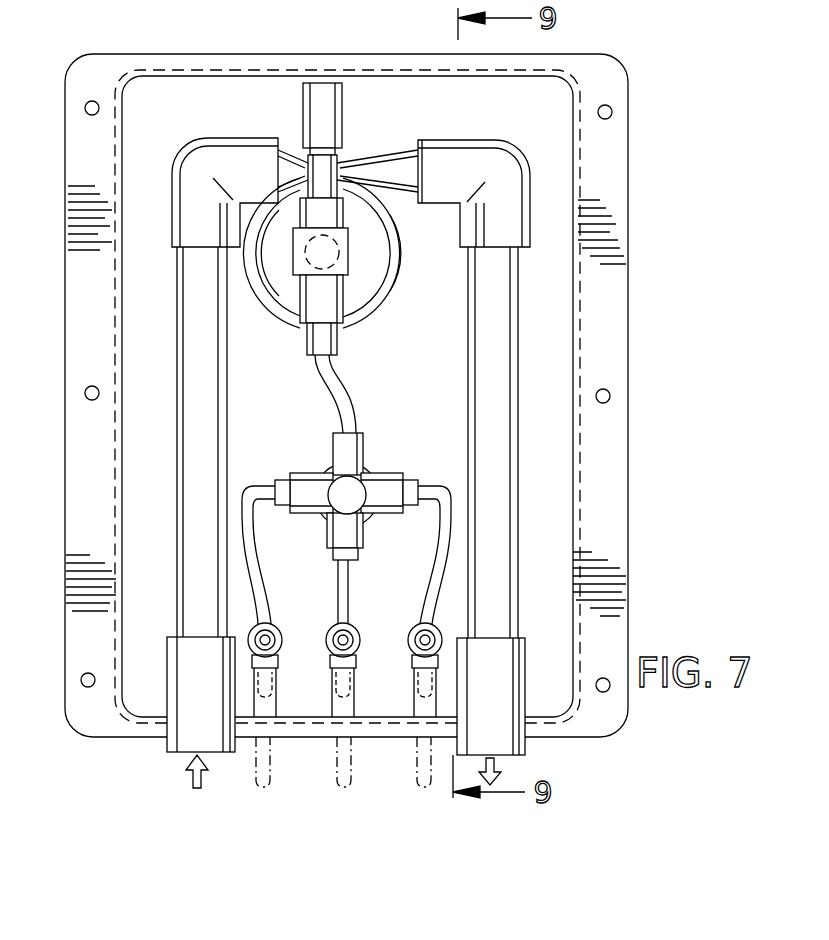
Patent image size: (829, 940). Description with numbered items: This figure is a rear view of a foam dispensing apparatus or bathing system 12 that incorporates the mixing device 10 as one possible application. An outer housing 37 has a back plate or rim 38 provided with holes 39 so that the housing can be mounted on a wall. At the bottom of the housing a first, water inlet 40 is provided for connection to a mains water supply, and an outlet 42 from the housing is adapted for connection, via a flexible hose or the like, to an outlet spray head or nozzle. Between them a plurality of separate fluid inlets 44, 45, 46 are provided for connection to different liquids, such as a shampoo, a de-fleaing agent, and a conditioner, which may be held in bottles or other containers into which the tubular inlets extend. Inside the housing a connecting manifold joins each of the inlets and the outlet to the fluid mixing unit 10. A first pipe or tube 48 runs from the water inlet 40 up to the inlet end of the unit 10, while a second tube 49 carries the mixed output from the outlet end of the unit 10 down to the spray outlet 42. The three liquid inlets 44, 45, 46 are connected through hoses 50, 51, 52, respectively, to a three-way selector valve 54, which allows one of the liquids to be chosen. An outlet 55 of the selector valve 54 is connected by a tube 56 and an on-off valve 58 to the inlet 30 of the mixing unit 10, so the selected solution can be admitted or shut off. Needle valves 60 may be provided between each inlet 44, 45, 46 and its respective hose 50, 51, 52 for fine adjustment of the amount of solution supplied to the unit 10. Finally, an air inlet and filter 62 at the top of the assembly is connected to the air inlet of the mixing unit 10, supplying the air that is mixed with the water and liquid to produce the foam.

The mixing device 10 is at (370, 160).
The foam dispensing apparatus 12 is at (640, 298).
The inlet 30 is at (343, 219).
The outer housing 37 is at (557, 485).
The back plate 38 is at (618, 177).
The holes 39 is at (612, 115).
The water inlet 40 is at (180, 753).
The outlet 42 is at (517, 755).
The fluid inlet 44 is at (272, 743).
The fluid inlet 45 is at (337, 765).
The fluid inlet 46 is at (417, 752).
The first pipe 48 is at (210, 355).
The second tube 49 is at (513, 340).
The hose 50 is at (265, 530).
The hose 51 is at (348, 565).
The hose 52 is at (433, 535).
The three-way selector valve 54 is at (352, 474).
The outlet 55 is at (348, 443).
The tube 56 is at (325, 372).
The on-off valve 58 is at (352, 252).
The needle valves 60 is at (330, 627).
The air inlet and filter 62 is at (328, 112).